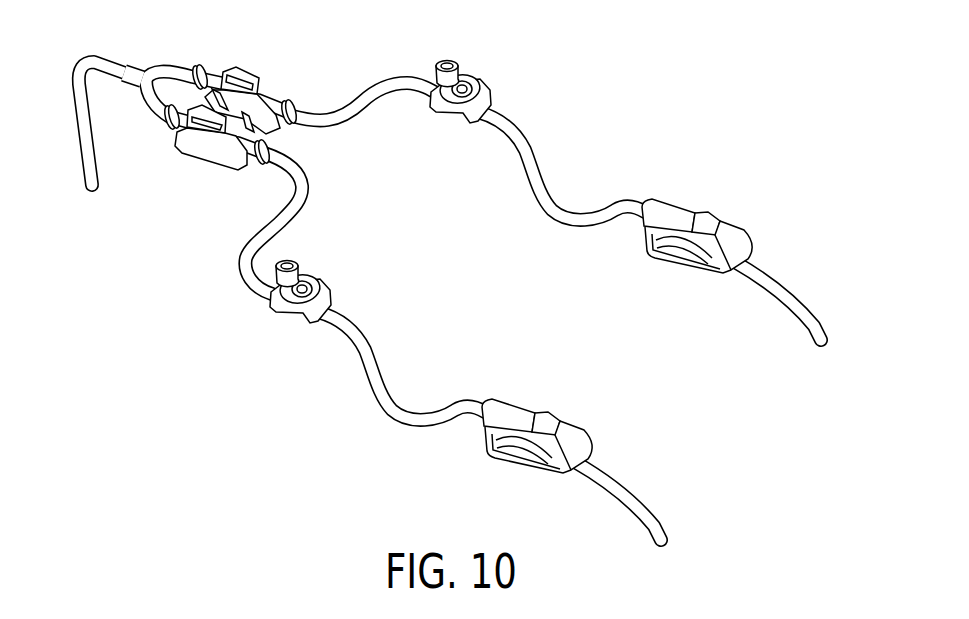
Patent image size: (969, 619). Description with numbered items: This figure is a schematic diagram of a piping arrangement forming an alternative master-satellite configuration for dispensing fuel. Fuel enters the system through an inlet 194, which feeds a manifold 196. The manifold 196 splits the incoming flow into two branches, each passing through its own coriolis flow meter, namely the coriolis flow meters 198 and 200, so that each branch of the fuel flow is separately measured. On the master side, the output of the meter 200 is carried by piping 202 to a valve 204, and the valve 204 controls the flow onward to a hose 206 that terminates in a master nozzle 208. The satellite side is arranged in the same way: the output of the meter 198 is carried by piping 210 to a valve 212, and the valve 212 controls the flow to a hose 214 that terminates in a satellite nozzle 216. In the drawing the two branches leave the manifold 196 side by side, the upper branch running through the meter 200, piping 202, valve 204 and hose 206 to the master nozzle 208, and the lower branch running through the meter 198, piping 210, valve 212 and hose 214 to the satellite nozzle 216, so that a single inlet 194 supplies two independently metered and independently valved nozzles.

The inlet 194 is at (93, 192).
The manifold 196 is at (171, 62).
The coriolis flow meter 198 is at (185, 152).
The coriolis flow meter 200 is at (268, 92).
The piping 202 is at (387, 77).
The valve 204 is at (485, 78).
The hose 206 is at (553, 192).
The master nozzle 208 is at (720, 215).
The piping 210 is at (233, 272).
The valve 212 is at (307, 270).
The hose 214 is at (387, 380).
The satellite nozzle 216 is at (562, 410).